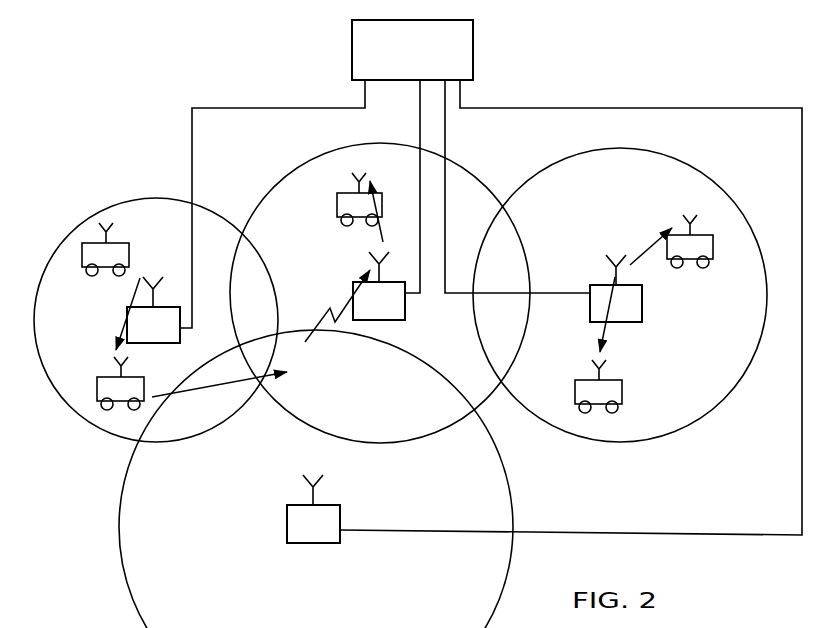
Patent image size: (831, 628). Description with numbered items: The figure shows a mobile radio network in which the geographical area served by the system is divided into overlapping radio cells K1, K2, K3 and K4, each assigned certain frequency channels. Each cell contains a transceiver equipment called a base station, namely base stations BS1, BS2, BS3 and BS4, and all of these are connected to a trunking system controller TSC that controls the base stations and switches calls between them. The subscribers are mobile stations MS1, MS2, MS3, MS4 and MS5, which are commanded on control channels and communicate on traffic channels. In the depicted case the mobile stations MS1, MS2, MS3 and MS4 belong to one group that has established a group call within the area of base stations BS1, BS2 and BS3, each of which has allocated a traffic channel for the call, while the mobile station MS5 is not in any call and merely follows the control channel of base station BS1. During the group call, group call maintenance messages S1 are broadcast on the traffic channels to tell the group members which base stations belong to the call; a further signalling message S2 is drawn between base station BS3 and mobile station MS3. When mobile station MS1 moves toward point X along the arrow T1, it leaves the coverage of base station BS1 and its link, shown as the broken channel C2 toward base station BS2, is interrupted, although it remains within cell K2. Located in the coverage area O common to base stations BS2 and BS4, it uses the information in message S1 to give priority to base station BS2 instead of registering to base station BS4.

The trunking system controller TSC is at (412, 50).
The radio cell K1 is at (110, 206).
The radio cell K2 is at (306, 162).
The radio cell K3 is at (556, 162).
The radio cell K4 is at (122, 482).
The mobile station MS1 is at (100, 377).
The mobile station MS2 is at (337, 207).
The mobile station MS3 is at (622, 398).
The mobile station MS4 is at (705, 233).
The mobile station MS5 is at (130, 255).
The base station BS1 is at (153, 310).
The base station BS2 is at (379, 286).
The base station BS3 is at (643, 290).
The base station BS4 is at (313, 509).
The group call maintenance message S1 is at (132, 318).
The signal S2 is at (605, 330).
The channel C2 (interrupted link) C2 is at (318, 325).
The arrow T1 is at (214, 387).
The point X is at (299, 376).
The common coverage area O is at (435, 438).